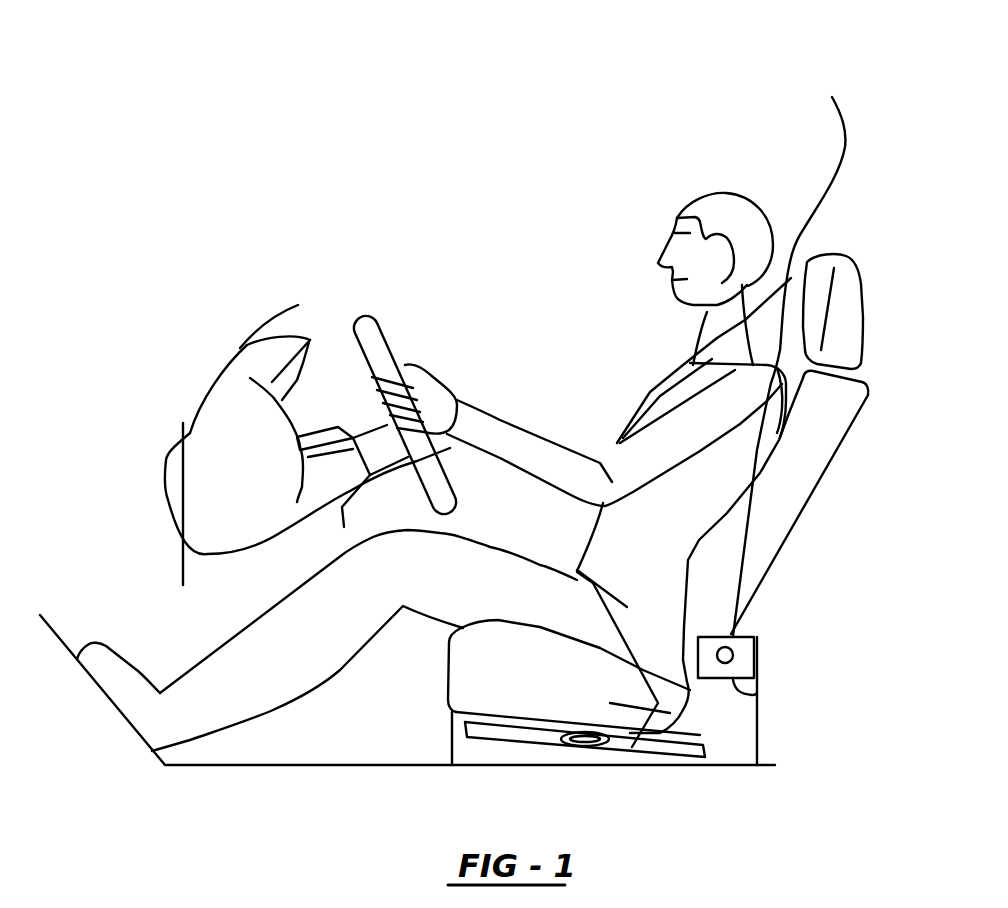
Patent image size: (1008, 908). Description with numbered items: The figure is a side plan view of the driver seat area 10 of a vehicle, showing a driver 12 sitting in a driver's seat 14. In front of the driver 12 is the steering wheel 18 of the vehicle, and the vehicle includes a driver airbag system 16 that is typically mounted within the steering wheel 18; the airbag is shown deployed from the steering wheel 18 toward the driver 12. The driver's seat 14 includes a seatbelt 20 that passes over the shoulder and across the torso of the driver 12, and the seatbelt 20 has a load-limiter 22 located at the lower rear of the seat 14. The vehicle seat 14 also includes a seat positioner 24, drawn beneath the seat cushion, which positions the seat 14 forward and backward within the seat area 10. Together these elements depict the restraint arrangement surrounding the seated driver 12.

The driver seat area 10 is at (293, 117).
The driver 12 is at (739, 197).
The driver's seat 14 is at (450, 683).
The driver airbag system 16 is at (435, 355).
The steering wheel 18 is at (365, 318).
The seatbelt 20 is at (711, 409).
The load-limiter 22 is at (757, 692).
The seat positioner 24 is at (587, 746).